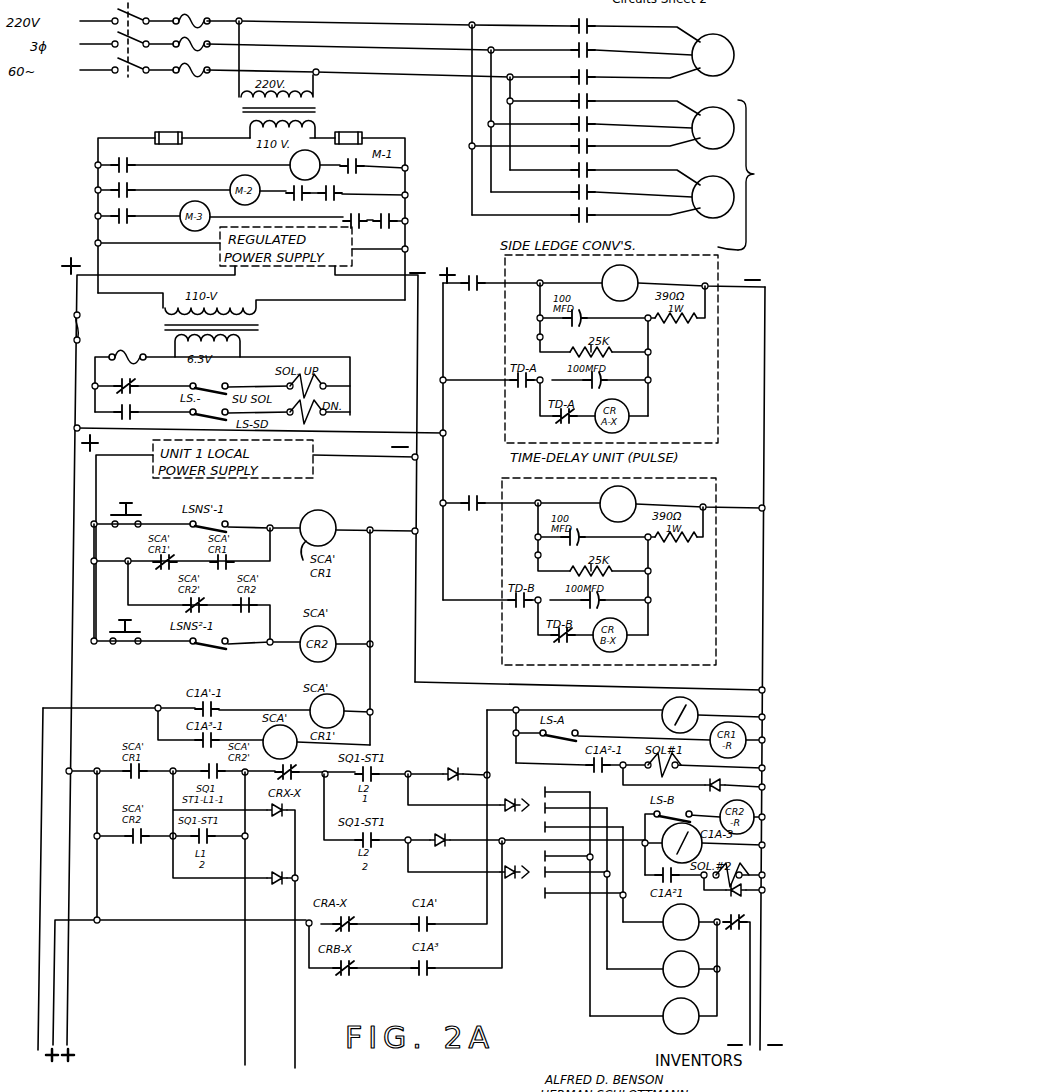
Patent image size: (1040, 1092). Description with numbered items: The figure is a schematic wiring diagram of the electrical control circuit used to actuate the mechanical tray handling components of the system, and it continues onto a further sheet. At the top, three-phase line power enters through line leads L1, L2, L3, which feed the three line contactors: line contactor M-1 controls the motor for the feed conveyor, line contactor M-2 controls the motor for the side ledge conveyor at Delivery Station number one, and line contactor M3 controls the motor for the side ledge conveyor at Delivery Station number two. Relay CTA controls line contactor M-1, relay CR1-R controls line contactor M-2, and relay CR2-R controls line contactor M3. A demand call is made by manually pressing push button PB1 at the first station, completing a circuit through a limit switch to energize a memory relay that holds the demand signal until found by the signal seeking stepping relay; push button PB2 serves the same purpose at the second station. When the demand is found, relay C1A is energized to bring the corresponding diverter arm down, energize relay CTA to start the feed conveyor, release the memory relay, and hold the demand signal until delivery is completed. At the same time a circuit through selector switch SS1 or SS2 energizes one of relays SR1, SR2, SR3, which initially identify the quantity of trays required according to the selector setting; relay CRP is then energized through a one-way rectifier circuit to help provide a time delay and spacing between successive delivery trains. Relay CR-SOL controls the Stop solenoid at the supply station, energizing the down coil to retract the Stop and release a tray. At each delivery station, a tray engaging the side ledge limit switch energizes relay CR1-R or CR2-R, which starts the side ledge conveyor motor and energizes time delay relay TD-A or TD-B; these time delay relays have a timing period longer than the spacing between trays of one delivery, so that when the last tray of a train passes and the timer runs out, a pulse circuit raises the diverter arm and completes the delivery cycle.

The line 1 disconnect switch and fuse L1 is at (145, 16).
The line 2 disconnect switch and fuse L2 is at (145, 40).
The line 3 disconnect switch and fuse L3 is at (145, 66).
The line contactor M-1 is at (651, 41).
The line contactor M-2 is at (667, 117).
The line contactor M-3 M3 is at (669, 186).
The relay CTA is at (121, 160).
The relay CR1-R is at (121, 185).
The relay CR2-R is at (121, 211).
The relay CR-SOL is at (120, 392).
The push button PB #1 PB1 is at (122, 504).
The push button PB #2 PB2 is at (120, 625).
The Selector Switch SS1 is at (560, 806).
The Selector Switch SS2 is at (561, 874).
The relay SR1 is at (653, 984).
The relay SR2 is at (662, 969).
The relay SR3 is at (670, 922).
The relay CRP is at (734, 971).
The time delay relay TD-A is at (620, 283).
The time delay relay TD-B is at (618, 504).
The relay CIA'-1 C1A is at (664, 712).